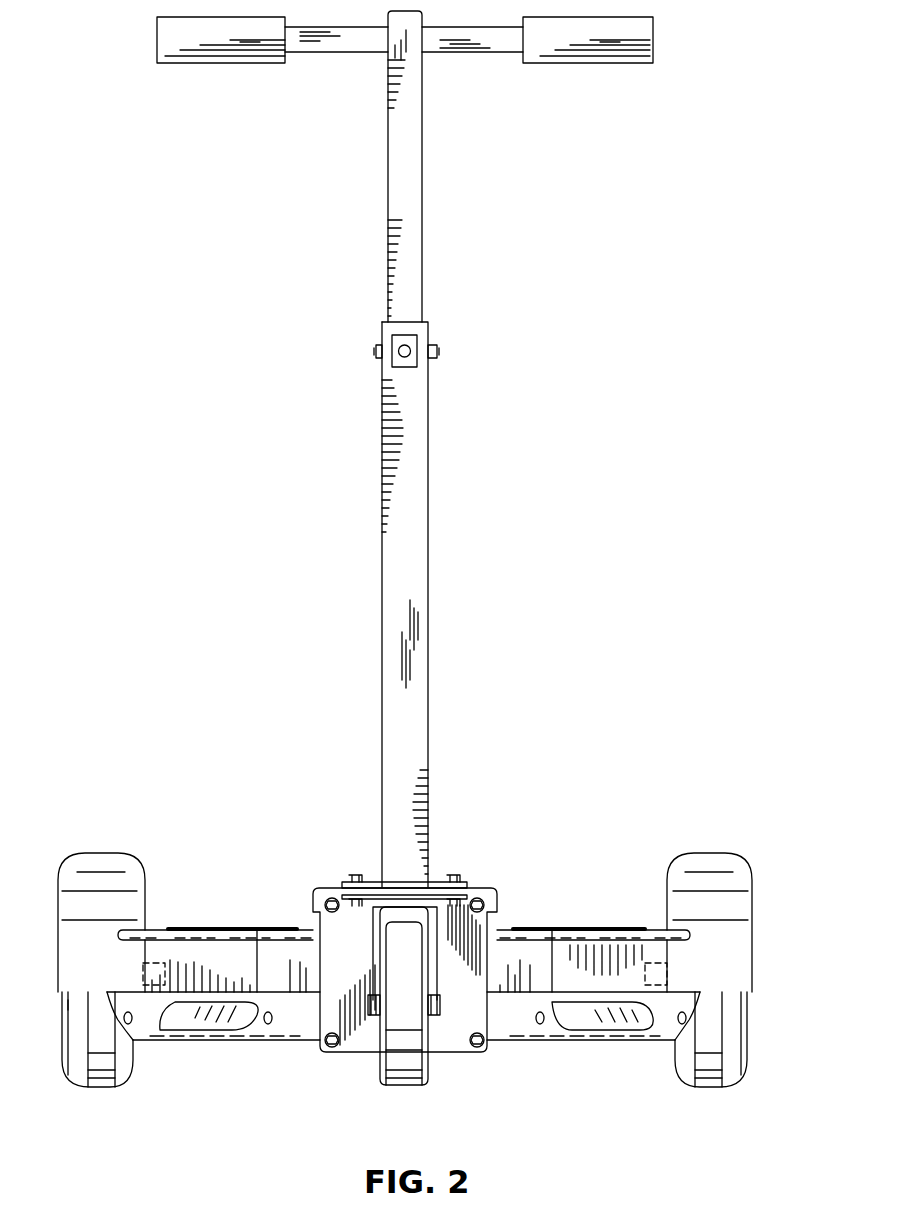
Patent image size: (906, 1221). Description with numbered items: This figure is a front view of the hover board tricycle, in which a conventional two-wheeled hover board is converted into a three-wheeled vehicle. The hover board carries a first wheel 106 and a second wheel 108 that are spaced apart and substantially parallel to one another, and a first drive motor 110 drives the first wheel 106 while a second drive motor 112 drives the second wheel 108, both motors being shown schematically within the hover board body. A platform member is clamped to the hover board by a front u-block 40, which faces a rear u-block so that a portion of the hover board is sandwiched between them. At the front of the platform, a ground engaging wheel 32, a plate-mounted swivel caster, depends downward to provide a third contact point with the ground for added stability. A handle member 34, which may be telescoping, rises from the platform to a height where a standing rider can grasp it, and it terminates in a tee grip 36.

The ground engaging wheel 32 is at (410, 1086).
The handle member 34 is at (428, 515).
The tee grip 36 is at (566, 64).
The front u-block 40 is at (478, 937).
The first wheel 106 is at (100, 1087).
The second wheel 108 is at (708, 1087).
The first drive motor 110 is at (145, 963).
The second drive motor 112 is at (655, 963).